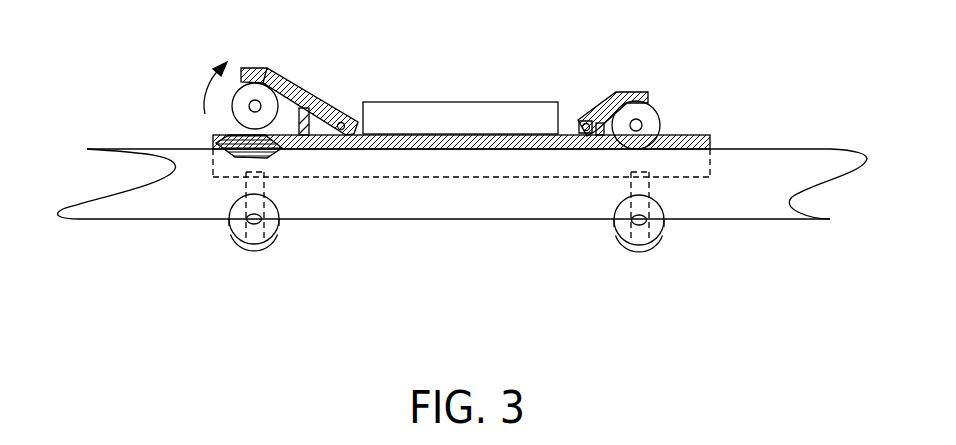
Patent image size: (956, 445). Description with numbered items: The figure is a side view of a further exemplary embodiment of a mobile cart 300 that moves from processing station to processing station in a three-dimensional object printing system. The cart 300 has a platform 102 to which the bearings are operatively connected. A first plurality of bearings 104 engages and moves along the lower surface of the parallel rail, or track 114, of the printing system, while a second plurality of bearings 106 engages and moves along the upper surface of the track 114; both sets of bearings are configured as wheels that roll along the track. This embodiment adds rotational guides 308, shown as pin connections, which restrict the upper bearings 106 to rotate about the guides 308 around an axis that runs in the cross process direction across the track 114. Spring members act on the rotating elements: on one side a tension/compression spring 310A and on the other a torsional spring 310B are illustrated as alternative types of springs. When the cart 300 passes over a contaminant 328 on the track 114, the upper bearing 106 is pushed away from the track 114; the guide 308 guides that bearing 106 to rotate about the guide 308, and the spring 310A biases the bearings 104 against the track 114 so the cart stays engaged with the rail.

The platform 102 is at (410, 131).
The first plurality of bearings 104 is at (230, 240).
The second plurality of bearings 106 is at (261, 77).
The rail 114 is at (106, 193).
The mobile cart 300 is at (436, 238).
The rotational guide 308 is at (340, 129).
The tension/compression spring 310A is at (302, 95).
The torsional spring 310B is at (581, 118).
The contaminant 328 is at (211, 140).